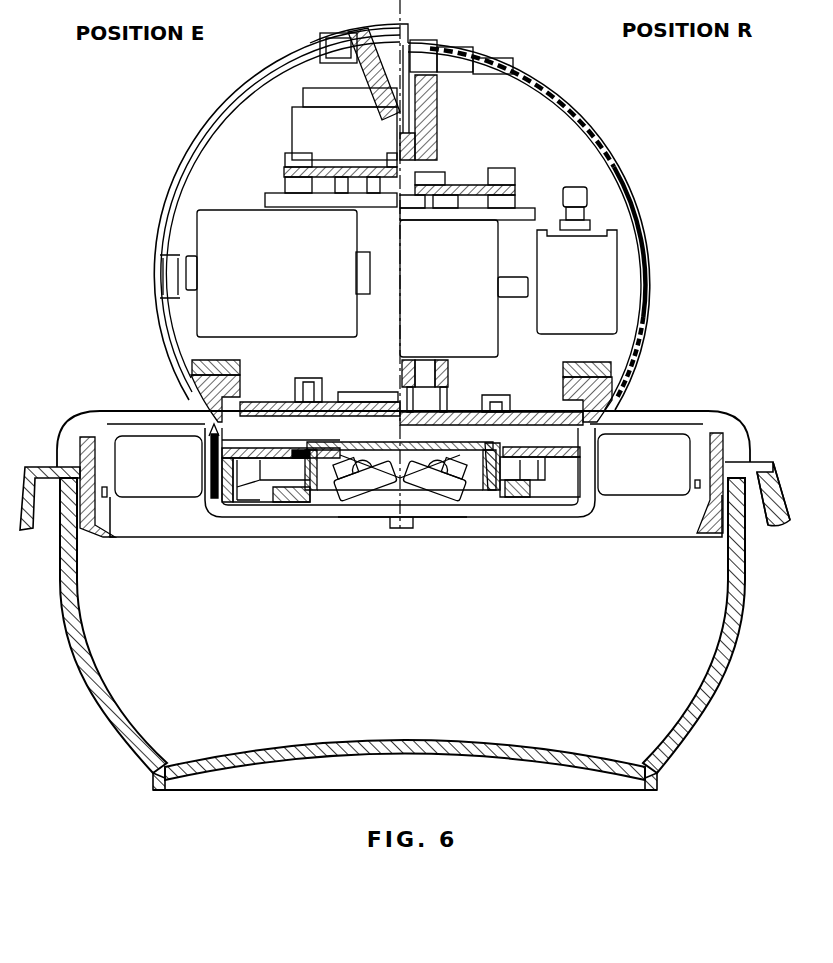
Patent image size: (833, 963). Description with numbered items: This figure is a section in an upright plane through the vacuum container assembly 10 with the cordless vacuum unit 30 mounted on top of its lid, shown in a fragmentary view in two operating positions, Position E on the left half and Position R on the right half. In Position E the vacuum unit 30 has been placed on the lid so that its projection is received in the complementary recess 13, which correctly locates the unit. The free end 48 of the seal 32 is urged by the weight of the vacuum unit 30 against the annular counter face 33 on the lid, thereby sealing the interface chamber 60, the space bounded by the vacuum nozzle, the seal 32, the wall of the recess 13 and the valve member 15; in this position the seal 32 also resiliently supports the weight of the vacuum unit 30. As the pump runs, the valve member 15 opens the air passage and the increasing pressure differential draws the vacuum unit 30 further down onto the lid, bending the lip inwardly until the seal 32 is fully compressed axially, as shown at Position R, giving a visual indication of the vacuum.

The vacuum container assembly 10 is at (735, 378).
The recess 13 is at (253, 502).
The valve member 15 is at (377, 487).
The vacuum unit 30 is at (682, 273).
The seal 32 is at (177, 394).
The annular counter face 33 is at (130, 421).
The free end 48 is at (208, 473).
The interface chamber 60 is at (290, 442).